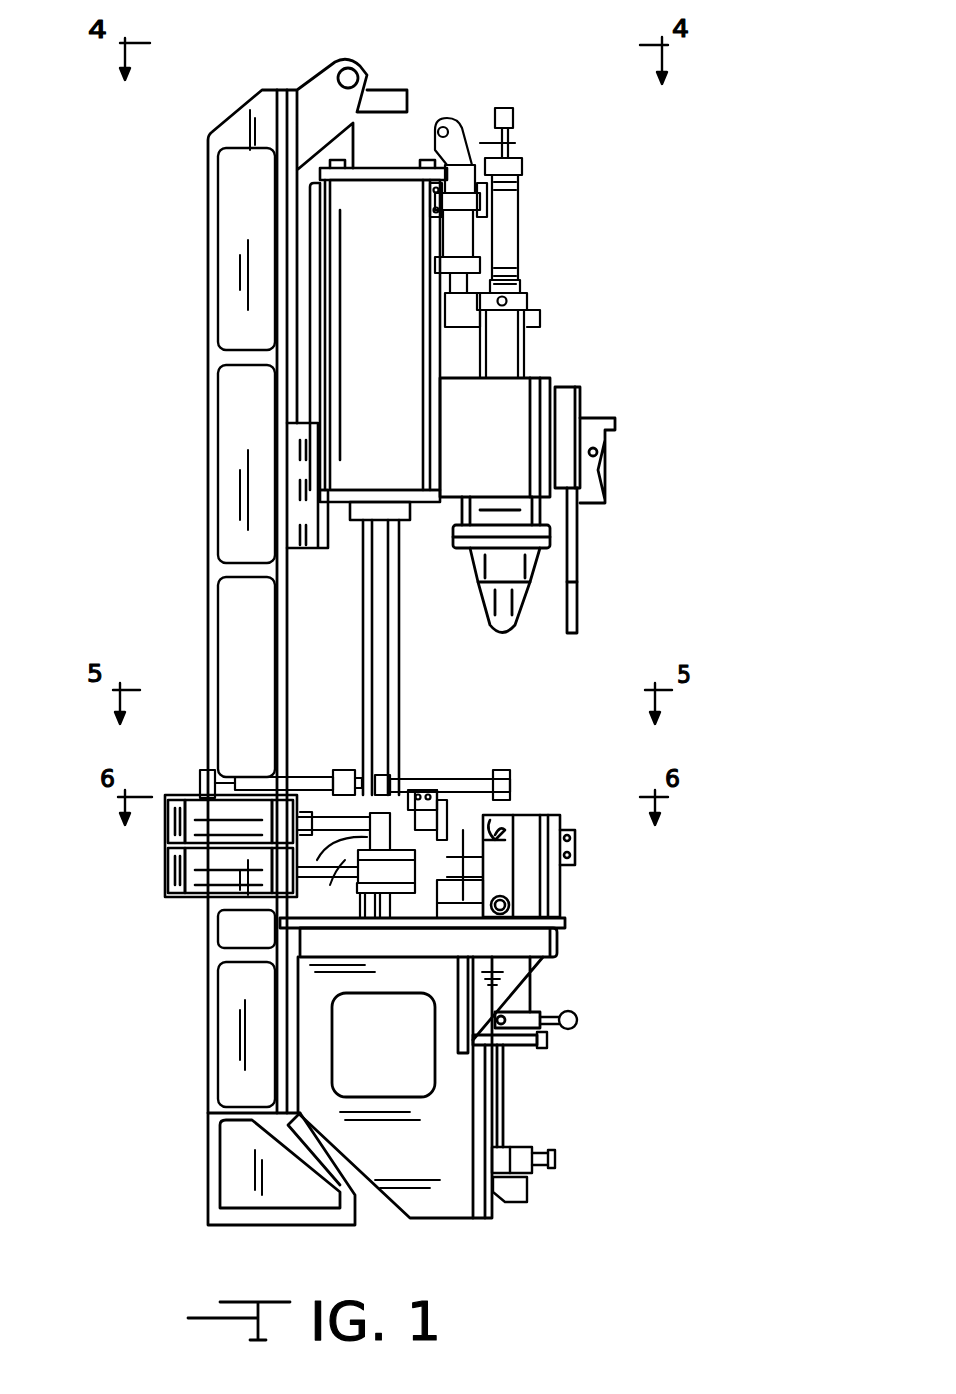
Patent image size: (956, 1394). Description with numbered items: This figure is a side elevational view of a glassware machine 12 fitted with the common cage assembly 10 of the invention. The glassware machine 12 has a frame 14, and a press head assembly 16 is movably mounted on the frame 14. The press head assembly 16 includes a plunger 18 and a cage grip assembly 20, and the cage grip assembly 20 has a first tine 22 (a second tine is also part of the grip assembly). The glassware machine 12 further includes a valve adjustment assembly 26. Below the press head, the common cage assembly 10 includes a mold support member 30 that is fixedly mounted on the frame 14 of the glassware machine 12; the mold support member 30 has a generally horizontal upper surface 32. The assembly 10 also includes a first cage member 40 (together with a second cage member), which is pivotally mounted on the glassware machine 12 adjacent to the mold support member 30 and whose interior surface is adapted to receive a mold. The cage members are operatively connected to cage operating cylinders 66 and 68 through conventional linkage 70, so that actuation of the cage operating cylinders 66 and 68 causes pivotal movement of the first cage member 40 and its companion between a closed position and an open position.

The common cage assembly 10 is at (600, 682).
The glassware machine 12 is at (208, 180).
The frame 14 is at (208, 300).
The press head assembly 16 is at (553, 377).
The plunger 18 is at (482, 630).
The cage grip assembly 20 is at (577, 543).
The first tine 22 is at (577, 613).
The valve adjustment assembly 26 is at (510, 1045).
The mold support member 30 is at (565, 945).
The upper surface 32 is at (565, 922).
The first cage member 40 is at (548, 887).
The cage operating cylinder 66 is at (195, 822).
The cage operating cylinder 68 is at (195, 880).
The linkage 70 is at (353, 893).